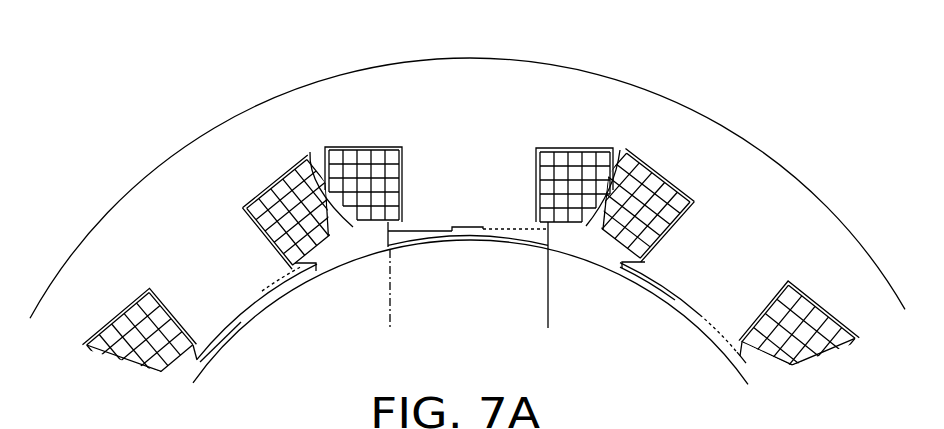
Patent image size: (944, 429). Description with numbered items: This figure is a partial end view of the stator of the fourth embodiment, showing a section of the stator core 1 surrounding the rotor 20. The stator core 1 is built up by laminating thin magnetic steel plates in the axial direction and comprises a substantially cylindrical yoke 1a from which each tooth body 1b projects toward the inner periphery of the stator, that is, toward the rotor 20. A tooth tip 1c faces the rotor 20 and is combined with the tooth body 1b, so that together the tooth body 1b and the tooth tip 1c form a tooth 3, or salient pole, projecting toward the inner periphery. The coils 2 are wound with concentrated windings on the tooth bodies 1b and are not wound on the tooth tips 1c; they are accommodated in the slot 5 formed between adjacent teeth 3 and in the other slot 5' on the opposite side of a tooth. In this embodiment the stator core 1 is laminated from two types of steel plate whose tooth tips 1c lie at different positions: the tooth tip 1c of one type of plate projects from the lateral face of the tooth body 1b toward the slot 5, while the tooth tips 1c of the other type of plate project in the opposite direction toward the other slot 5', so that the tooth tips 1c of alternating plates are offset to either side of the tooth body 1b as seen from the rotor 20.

The stator core 1 is at (726, 122).
The yoke 1a is at (238, 158).
The tooth body 1b is at (423, 205).
The tooth tip 1c is at (520, 236).
The coil 2 is at (570, 160).
The tooth 3 is at (474, 170).
The slot 5 is at (311, 119).
The other slot 5' is at (641, 138).
The rotor 20 is at (293, 376).